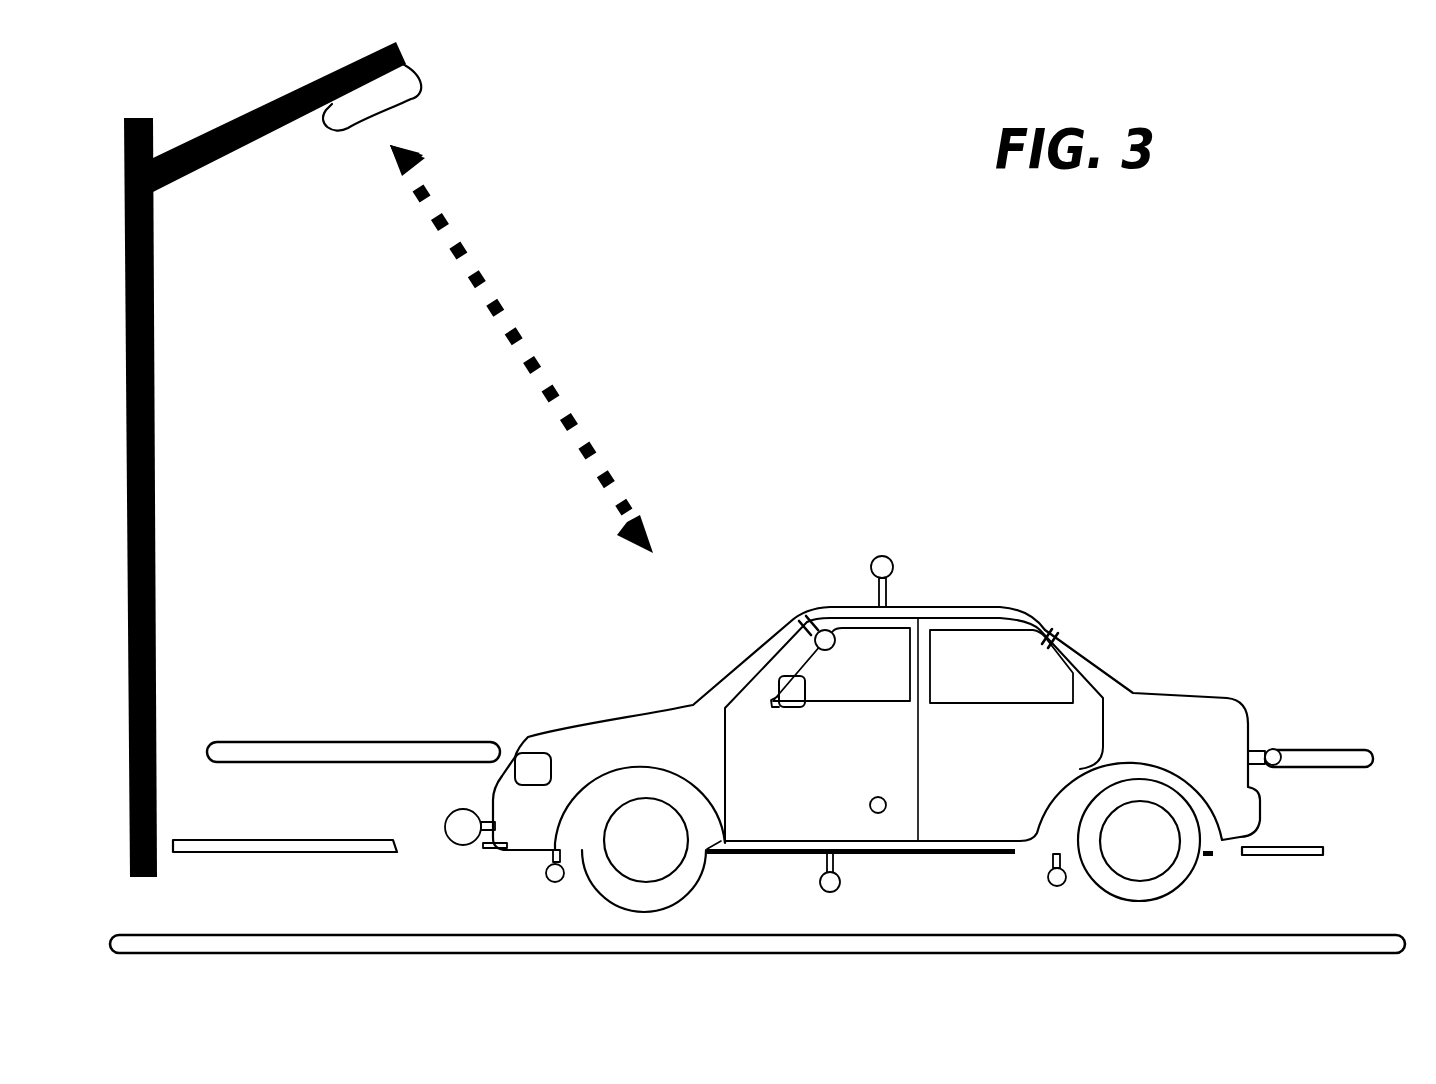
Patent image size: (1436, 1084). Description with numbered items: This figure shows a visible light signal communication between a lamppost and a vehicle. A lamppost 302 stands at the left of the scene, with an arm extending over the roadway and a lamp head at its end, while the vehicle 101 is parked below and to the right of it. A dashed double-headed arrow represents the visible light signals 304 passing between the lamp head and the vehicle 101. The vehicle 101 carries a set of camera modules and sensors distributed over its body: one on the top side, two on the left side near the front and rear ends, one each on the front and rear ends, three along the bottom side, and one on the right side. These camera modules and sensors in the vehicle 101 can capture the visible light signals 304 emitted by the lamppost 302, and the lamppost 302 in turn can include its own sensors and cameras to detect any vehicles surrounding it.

The first vehicle 101 is at (1200, 641).
The lamppost 302 is at (405, 97).
The visible light signals 304 is at (510, 313).